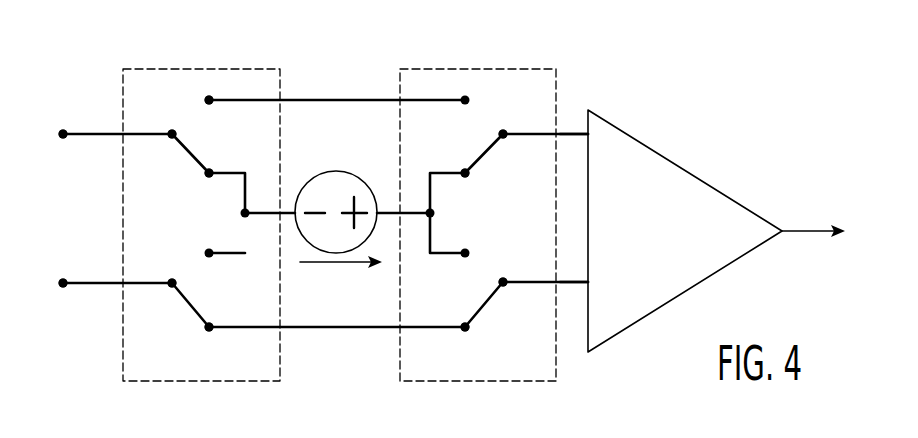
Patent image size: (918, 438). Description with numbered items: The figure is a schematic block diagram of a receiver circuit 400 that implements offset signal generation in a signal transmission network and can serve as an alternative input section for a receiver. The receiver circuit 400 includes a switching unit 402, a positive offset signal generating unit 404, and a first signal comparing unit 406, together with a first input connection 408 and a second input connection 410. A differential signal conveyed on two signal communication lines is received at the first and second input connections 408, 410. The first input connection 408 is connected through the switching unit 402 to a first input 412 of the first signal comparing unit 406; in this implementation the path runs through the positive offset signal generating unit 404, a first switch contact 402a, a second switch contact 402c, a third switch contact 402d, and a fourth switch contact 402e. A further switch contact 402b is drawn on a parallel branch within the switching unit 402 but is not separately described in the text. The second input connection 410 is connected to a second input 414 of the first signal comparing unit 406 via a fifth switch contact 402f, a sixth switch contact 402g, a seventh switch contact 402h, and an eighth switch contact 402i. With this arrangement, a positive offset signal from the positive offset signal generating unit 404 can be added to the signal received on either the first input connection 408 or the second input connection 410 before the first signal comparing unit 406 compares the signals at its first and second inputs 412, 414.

The receiver circuit 400 is at (732, 100).
The switching unit 402 is at (275, 68).
The first switch contact 402a is at (172, 134).
The second switch node 402b is at (209, 95).
The second switch contact 402c is at (209, 173).
The third switch contact 402d is at (465, 173).
The fourth switch contact 402e is at (503, 134).
The fifth switch contact 402f is at (172, 283).
The sixth switch contact 402g is at (209, 327).
The seventh switch contact 402h is at (465, 327).
The eighth switch contact 402i is at (503, 282).
The positive offset signal generating unit 404 is at (333, 170).
The first signal comparing unit 406 is at (712, 190).
The first input connection 408 is at (68, 125).
The second input connection 410 is at (67, 278).
The first input 412 is at (592, 137).
The second input 414 is at (588, 282).